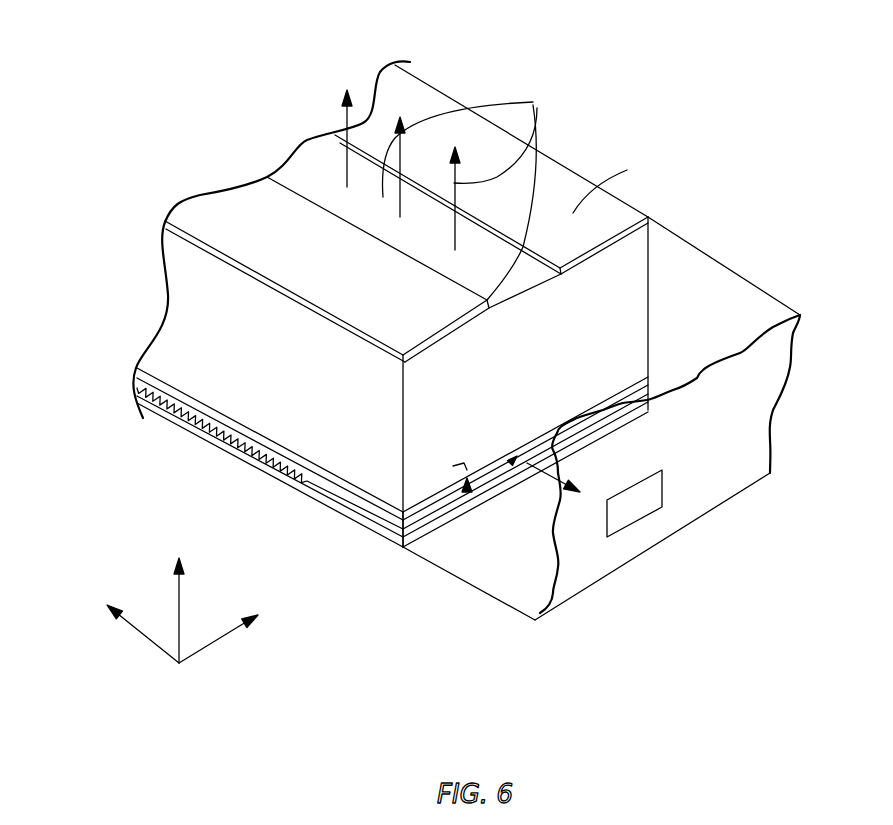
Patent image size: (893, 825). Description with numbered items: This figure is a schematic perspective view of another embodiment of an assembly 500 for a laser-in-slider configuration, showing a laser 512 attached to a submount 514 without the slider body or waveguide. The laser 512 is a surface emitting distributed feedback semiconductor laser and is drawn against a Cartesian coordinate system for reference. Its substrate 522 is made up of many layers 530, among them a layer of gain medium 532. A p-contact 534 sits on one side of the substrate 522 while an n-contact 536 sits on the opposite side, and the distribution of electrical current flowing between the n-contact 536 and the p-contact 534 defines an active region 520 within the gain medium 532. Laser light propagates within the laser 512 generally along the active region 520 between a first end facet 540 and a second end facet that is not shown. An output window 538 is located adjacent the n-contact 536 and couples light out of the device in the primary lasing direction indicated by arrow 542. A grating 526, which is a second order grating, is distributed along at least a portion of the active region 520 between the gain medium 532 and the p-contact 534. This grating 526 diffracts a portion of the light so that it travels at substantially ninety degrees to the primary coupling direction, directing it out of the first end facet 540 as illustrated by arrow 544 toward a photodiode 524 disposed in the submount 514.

The assembly 500 is at (162, 106).
The laser 512 is at (174, 181).
The submount 514 is at (688, 285).
The active region 520 is at (463, 445).
The substrate 522 is at (183, 313).
The photodiode 524 is at (222, 433).
The grating 526 is at (620, 517).
The layers 530 is at (110, 378).
The gain medium 532 is at (132, 375).
The p-contact 534 is at (343, 513).
The n-contact 536 is at (572, 183).
The output window 538 is at (447, 112).
The first end facet 540 is at (467, 490).
The arrow 542 is at (486, 139).
The arrow 544 is at (463, 445).